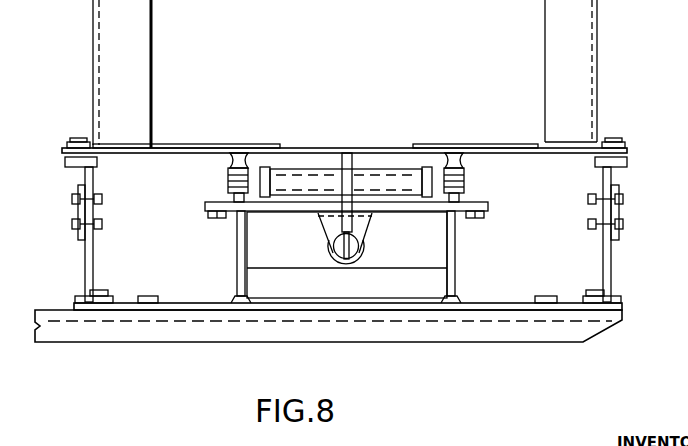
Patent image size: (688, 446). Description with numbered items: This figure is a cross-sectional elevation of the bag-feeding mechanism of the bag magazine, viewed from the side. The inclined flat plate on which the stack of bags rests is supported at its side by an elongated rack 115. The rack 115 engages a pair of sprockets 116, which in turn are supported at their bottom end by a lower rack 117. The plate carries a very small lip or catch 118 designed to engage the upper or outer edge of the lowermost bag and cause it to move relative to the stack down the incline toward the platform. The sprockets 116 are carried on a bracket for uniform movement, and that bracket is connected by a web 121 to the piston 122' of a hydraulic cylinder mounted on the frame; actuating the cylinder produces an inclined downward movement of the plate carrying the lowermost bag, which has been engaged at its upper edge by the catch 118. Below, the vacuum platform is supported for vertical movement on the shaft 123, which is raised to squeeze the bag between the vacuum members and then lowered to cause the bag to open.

The elongated rack 115 is at (239, 156).
The sprockets 116 is at (229, 175).
The lower rack 117 is at (227, 203).
The lip or catch 118 is at (207, 144).
The web 121 is at (352, 220).
The piston 122' is at (319, 243).
The shaft 123 is at (364, 249).